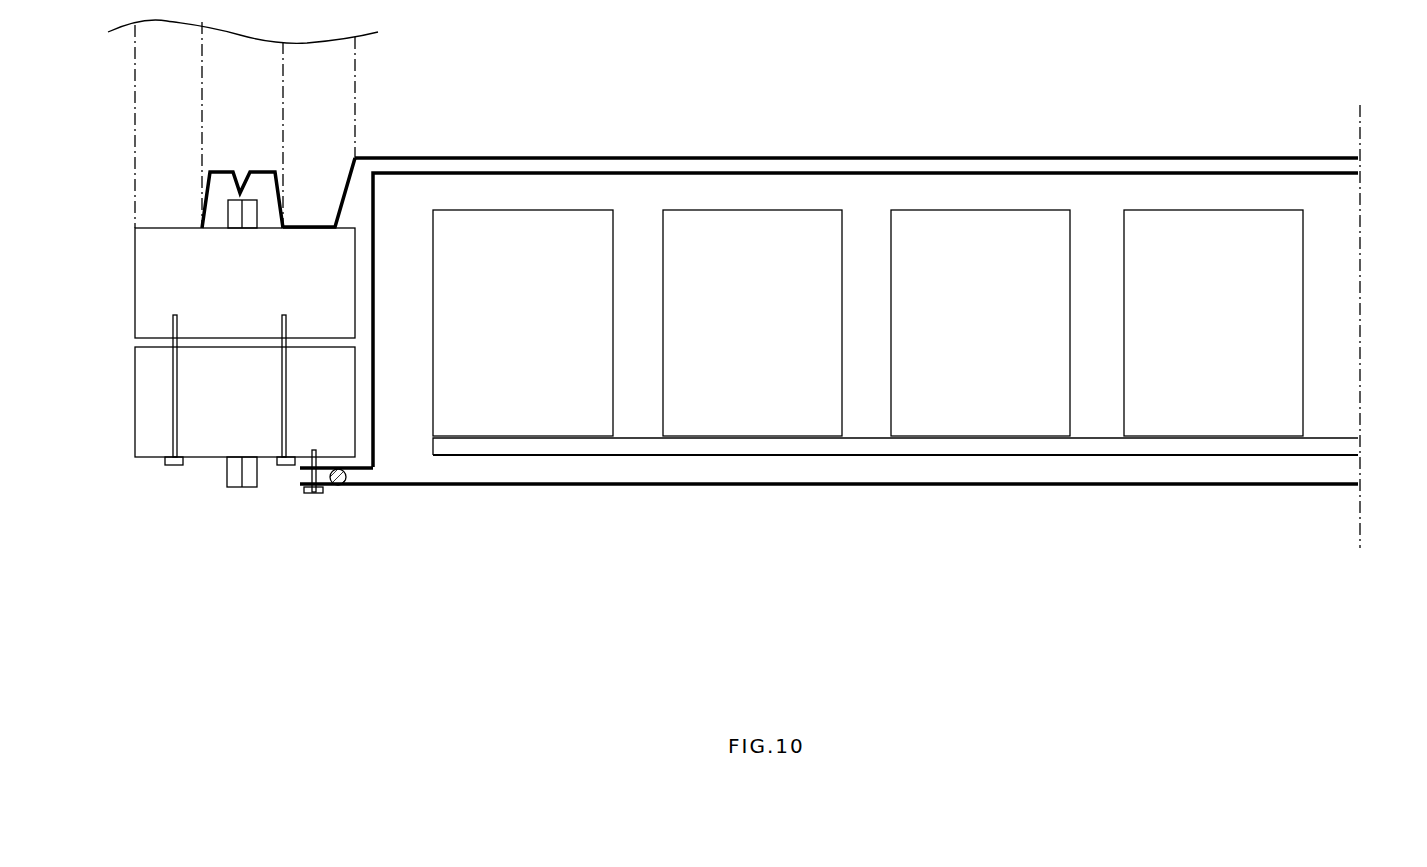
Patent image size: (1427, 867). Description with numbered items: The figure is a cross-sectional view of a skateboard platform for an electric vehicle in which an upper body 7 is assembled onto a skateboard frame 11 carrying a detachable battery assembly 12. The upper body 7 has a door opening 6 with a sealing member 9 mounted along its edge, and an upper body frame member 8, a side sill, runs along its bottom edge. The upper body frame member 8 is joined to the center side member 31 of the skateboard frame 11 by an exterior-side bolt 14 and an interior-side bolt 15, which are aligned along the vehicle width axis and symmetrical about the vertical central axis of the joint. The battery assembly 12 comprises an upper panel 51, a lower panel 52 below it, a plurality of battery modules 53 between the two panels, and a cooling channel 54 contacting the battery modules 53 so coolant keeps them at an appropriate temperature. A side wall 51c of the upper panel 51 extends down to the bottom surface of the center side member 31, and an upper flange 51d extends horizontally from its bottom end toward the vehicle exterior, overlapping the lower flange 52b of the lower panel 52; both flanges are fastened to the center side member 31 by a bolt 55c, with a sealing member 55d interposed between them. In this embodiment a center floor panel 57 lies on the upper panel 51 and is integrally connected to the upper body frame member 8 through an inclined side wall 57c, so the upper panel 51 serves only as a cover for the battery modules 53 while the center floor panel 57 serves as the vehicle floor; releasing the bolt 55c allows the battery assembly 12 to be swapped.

The door opening 6 is at (202, 118).
The upper body 7 is at (357, 75).
The upper body frame member 8 is at (135, 282).
The sealing member 9 is at (210, 189).
The skateboard frame 11 is at (108, 379).
The battery assembly 12 is at (1363, 282).
The exterior-side bolt 14 is at (173, 425).
The interior-side bolt 15 is at (283, 415).
The center side member 31 is at (135, 421).
The upper panel 51 is at (938, 173).
The side wall 51c is at (373, 200).
The upper flange 51d is at (362, 465).
The lower panel 52 is at (916, 487).
The lower flange 52b is at (342, 484).
The battery module 53 is at (520, 228).
The cooling channel 54 is at (550, 448).
The bolt 55c is at (312, 495).
The sealing member 55d is at (347, 476).
The center floor panel 57 is at (865, 157).
The side wall 57c is at (338, 187).